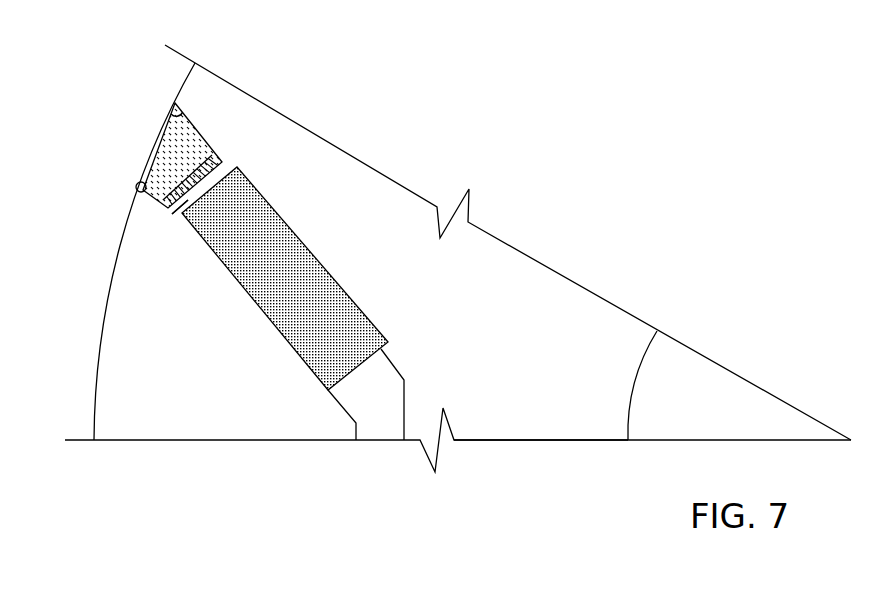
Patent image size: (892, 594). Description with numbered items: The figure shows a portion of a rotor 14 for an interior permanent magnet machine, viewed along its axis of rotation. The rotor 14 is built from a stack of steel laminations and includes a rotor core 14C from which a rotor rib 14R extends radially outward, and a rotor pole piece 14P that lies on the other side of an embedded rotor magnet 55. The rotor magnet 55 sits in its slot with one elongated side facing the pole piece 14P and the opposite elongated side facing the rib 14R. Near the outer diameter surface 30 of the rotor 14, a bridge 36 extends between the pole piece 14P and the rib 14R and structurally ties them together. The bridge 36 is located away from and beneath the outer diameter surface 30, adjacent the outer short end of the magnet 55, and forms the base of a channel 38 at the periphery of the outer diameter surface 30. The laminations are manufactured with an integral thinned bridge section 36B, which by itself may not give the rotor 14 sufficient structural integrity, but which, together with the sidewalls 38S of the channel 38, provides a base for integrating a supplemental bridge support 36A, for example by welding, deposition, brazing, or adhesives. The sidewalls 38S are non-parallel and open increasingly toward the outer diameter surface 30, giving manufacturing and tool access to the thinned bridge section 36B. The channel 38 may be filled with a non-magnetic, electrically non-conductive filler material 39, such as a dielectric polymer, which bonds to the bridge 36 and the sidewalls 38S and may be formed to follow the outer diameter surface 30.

The rotor 14 is at (441, 158).
The rotor rib 14R is at (360, 216).
The rotor core 14C is at (557, 415).
The rotor pole piece 14P is at (203, 363).
The outer diameter surface 30 is at (107, 313).
The bridge 36 is at (238, 155).
The supplemental bridge support 36A is at (218, 165).
The thinned bridge section 36B is at (173, 214).
The channel 38 is at (126, 162).
The sidewalls 38S is at (173, 117).
The filler material 39 is at (170, 140).
The rotor magnets 55 is at (295, 290).